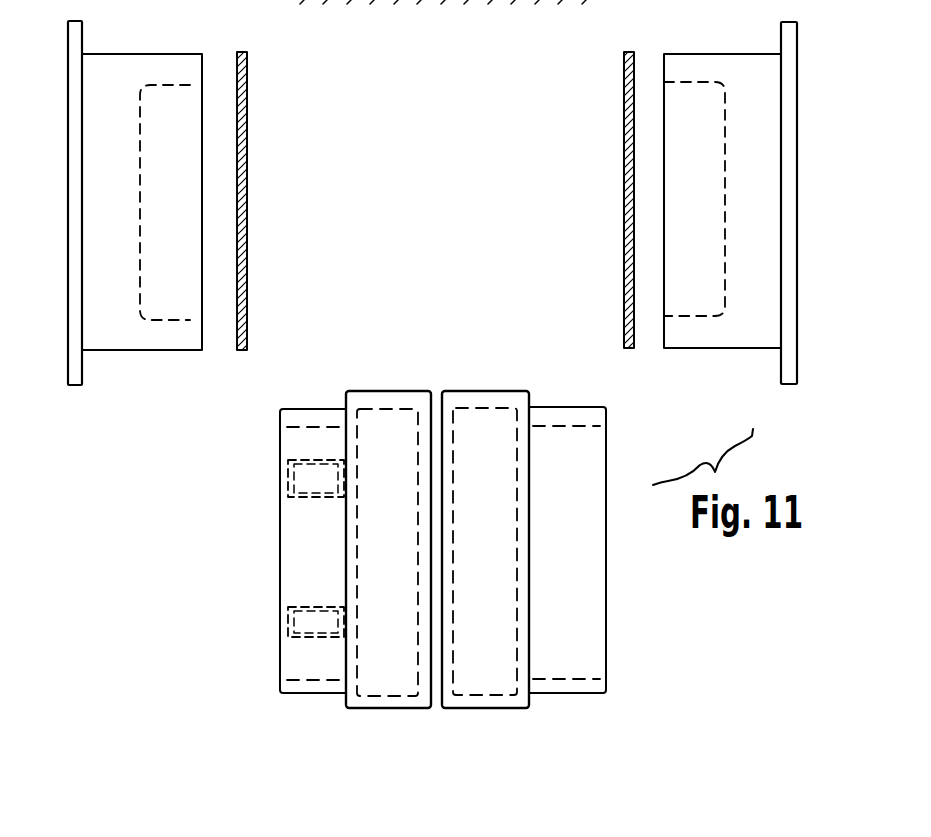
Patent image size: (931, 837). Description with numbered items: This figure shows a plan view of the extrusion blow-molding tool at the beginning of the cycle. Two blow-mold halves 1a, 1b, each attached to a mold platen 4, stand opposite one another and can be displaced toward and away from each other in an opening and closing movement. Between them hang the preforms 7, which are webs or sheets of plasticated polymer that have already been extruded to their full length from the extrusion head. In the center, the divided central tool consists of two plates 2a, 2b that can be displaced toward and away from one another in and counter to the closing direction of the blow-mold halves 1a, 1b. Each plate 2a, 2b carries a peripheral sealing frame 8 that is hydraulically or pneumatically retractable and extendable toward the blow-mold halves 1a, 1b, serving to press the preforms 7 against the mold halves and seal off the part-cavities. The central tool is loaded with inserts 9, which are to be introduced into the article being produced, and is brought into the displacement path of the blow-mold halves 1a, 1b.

The blow-mold half 1a is at (124, 68).
The blow-mold half 1b is at (724, 63).
The plate of the central tool 2a is at (393, 394).
The plate of the central tool 2b is at (482, 392).
The mold platen 4 is at (71, 182).
The preform 7 is at (243, 158).
The sealing frame 8 is at (298, 542).
The insert 9 is at (297, 483).